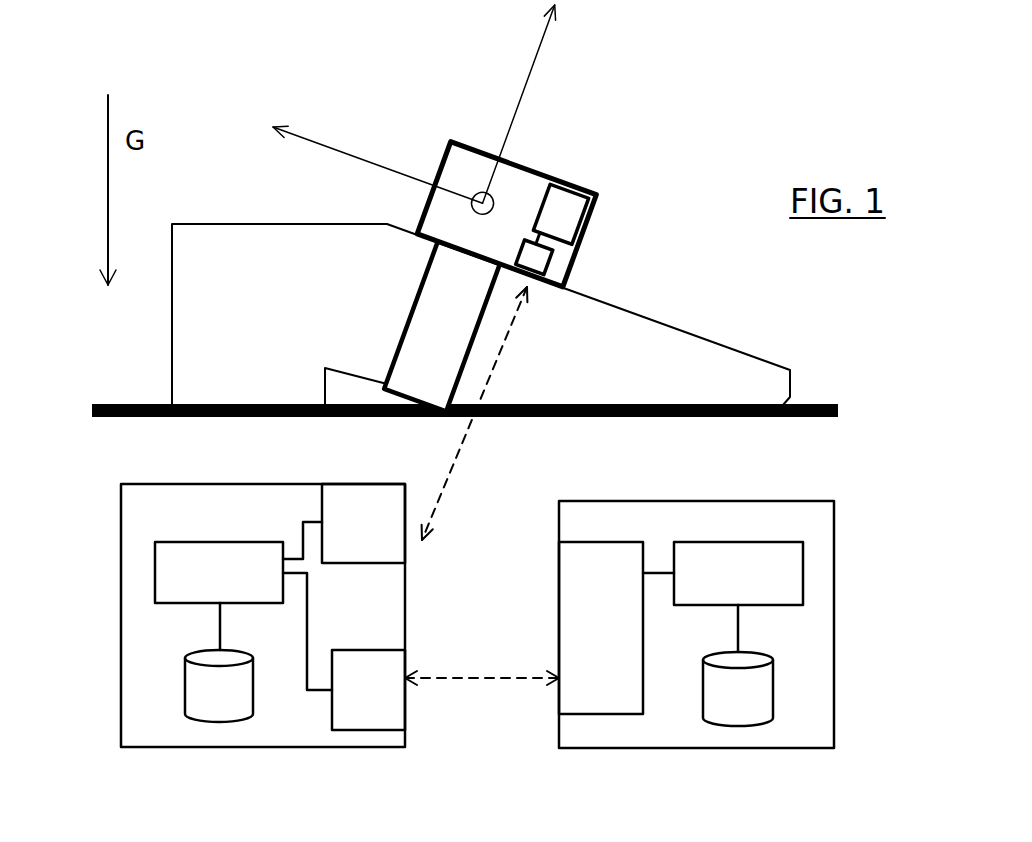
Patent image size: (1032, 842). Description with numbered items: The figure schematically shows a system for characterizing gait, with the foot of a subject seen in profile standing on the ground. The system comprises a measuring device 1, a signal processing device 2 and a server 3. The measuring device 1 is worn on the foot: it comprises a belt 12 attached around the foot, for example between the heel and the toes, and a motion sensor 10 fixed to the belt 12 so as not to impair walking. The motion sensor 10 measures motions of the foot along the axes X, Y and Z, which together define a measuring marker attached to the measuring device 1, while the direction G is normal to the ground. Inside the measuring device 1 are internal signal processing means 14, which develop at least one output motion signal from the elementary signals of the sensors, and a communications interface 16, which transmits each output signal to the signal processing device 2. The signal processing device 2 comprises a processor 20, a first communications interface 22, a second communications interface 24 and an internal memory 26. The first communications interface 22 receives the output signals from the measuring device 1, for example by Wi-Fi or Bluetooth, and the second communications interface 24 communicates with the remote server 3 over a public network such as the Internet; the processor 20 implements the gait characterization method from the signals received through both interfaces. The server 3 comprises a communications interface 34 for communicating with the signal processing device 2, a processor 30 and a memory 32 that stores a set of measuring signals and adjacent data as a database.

The measuring device 1 is at (648, 104).
The signal processing device 2 is at (121, 633).
The server 3 is at (834, 625).
The motion sensor 10 is at (530, 165).
The belt 12 is at (403, 333).
The internal signal processing means 14 is at (590, 217).
The communications interface 16 is at (560, 263).
The processor 20 is at (219, 573).
The first communications interface 22 is at (363, 523).
The second communications interface 24 is at (368, 690).
The internal memory 26 is at (219, 686).
The processor 30 is at (738, 573).
The memory 32 is at (738, 689).
The communications interface 34 is at (601, 628).